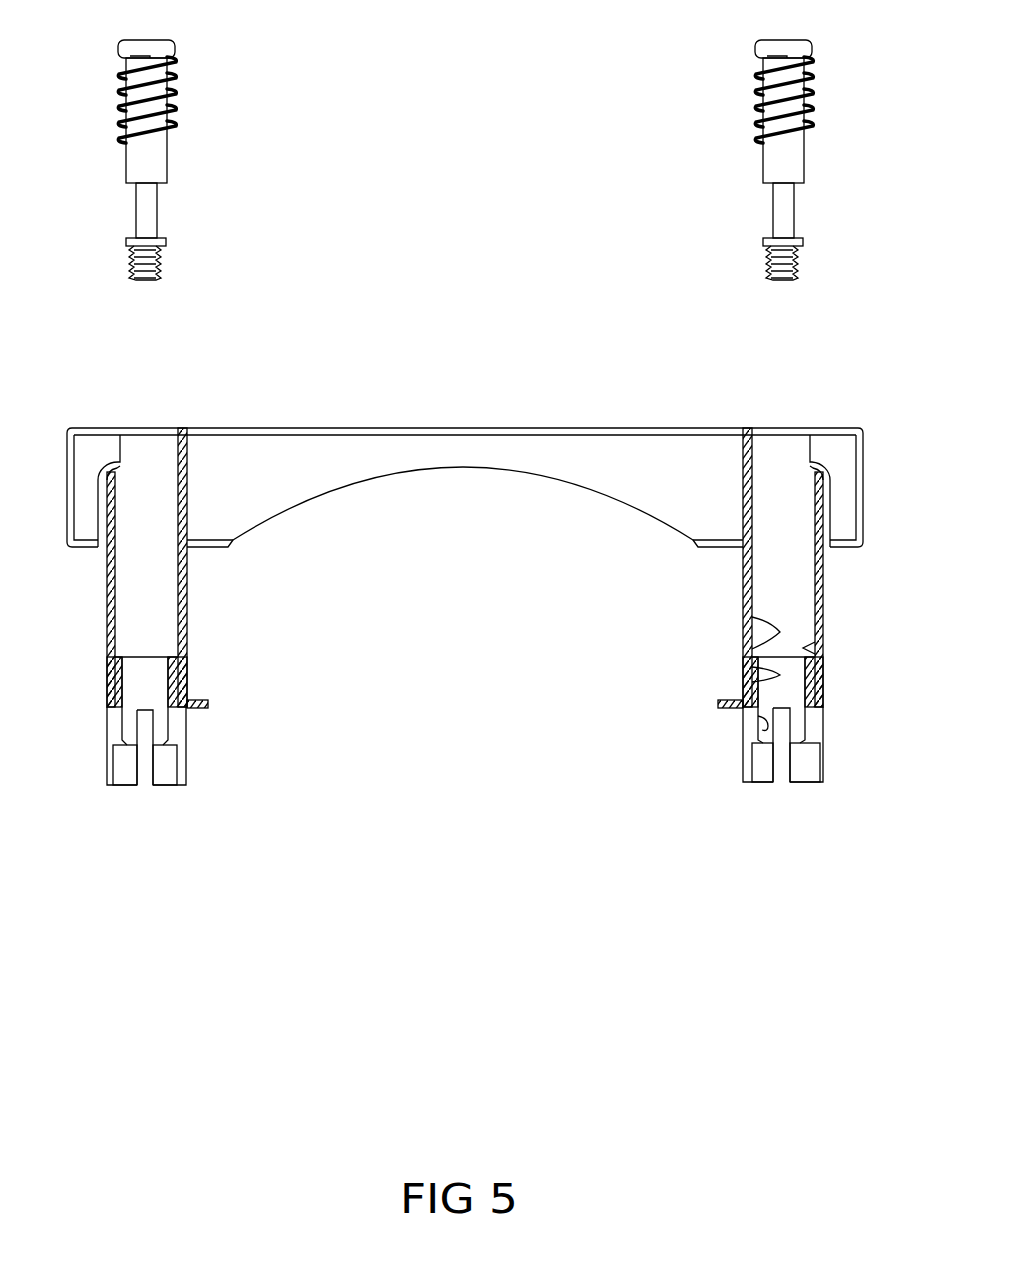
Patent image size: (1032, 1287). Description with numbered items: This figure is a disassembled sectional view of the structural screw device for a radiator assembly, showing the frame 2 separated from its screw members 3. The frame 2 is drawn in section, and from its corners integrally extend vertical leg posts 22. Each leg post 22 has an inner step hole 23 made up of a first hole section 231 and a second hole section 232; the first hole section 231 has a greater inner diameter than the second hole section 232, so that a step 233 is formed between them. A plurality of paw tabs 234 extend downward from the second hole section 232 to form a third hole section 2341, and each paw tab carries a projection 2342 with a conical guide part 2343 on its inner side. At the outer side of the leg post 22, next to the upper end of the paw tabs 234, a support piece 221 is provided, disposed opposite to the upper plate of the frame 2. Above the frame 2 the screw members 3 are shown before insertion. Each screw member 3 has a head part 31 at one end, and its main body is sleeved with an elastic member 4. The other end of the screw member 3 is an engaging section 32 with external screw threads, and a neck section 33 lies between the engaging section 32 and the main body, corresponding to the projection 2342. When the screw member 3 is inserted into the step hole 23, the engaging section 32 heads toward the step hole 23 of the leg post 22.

The frame 2 is at (433, 452).
The leg post 22 is at (822, 602).
The support piece 221 is at (208, 698).
The step hole 23 is at (665, 659).
The first hole section 231 is at (780, 634).
The second hole section 232 is at (780, 674).
The step 233 is at (806, 650).
The paw tabs 234 is at (180, 767).
The third hole section 2341 is at (762, 772).
The projection 2342 is at (808, 742).
The conical guide part 2343 is at (766, 725).
The screw member 3 is at (191, 155).
The head part 31 is at (158, 50).
The engaging section 32 is at (160, 273).
The neck section 33 is at (147, 213).
The elastic member 4 is at (163, 80).